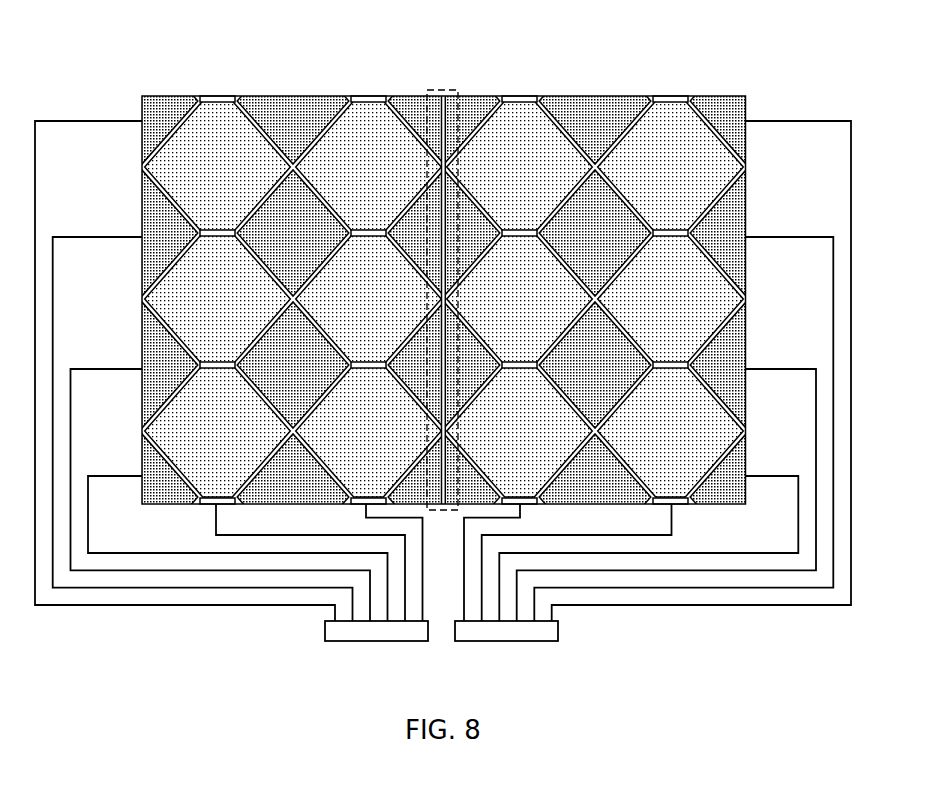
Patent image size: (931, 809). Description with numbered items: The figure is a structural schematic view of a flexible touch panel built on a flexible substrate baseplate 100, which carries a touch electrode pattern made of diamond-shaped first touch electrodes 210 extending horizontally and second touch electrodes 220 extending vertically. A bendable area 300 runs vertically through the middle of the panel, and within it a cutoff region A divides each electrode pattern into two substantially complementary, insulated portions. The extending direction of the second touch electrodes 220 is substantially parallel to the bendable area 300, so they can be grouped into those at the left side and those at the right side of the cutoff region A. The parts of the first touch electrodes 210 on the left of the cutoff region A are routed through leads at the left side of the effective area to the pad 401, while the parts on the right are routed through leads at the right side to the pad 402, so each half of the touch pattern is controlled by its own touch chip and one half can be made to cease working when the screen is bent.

The flexible substrate baseplate 100 is at (545, 80).
The first touch electrode 210 is at (444, 299).
The second touch electrode 220 is at (444, 258).
The bendable area 300 is at (442, 92).
The cutoff region A is at (483, 275).
The first bonding pad 401 is at (231, 404).
The second bonding pad 402 is at (653, 404).